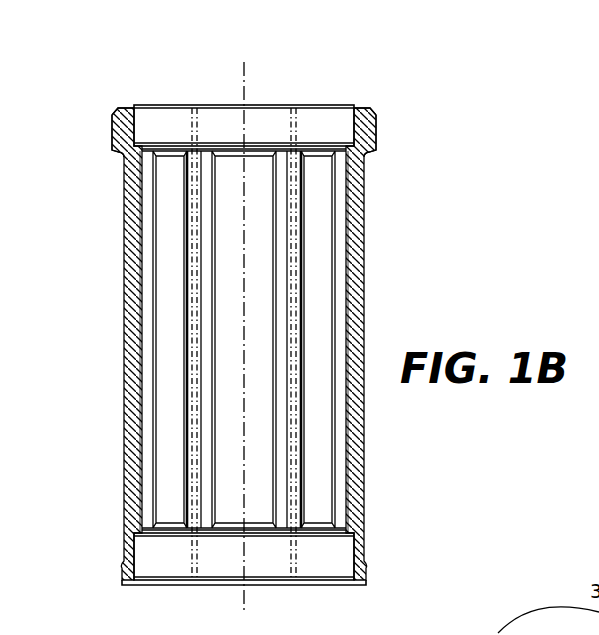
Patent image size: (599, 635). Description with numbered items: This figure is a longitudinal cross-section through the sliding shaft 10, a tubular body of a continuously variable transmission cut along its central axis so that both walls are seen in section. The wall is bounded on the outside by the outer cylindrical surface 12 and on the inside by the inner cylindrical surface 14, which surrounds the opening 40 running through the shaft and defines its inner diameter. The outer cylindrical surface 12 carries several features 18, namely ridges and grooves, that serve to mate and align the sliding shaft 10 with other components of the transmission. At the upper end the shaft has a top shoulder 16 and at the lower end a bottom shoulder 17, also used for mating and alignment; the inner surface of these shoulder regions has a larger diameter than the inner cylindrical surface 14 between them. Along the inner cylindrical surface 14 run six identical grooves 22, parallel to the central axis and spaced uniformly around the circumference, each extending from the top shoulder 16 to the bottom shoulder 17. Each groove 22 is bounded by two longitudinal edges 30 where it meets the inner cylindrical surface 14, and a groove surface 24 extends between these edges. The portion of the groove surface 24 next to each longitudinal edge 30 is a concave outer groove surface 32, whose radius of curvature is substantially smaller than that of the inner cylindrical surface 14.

The sliding shaft 10 is at (376, 77).
The outer cylindrical surface 12 is at (363, 304).
The inner cylindrical surface 14 is at (313, 252).
The top shoulder 16 is at (147, 105).
The bottom shoulder 17 is at (170, 585).
The features 18 is at (113, 154).
The grooves 22 is at (206, 155).
The groove surface 24 is at (203, 343).
The longitudinal edges 30 is at (213, 447).
The outer groove surface 32 is at (513, 633).
The opening 40 is at (257, 180).